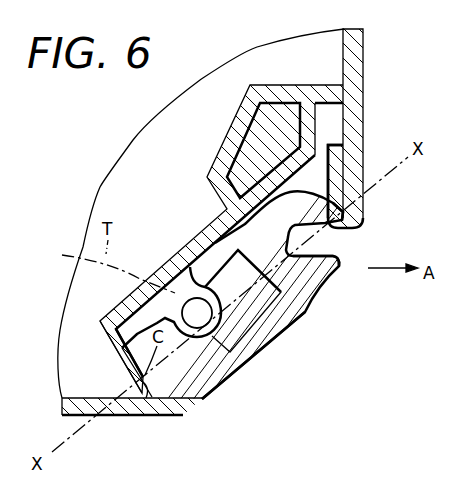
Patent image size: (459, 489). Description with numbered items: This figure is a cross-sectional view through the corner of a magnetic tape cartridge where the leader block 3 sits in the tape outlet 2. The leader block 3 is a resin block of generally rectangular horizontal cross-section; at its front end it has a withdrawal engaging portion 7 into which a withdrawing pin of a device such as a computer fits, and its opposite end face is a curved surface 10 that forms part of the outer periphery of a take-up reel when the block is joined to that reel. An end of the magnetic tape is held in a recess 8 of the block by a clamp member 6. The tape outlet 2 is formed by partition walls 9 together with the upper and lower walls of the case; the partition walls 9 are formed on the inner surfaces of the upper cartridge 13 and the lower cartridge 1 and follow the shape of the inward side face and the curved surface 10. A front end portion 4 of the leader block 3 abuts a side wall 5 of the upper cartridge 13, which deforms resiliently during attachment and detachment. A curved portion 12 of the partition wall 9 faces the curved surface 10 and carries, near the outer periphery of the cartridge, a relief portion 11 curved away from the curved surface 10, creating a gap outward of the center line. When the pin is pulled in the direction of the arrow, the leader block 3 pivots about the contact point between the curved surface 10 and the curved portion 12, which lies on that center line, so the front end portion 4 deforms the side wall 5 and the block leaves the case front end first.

The lower cartridge 1 is at (297, 322).
The tape outlet 2 is at (264, 357).
The leader block 3 is at (320, 280).
The front end portion 4 is at (338, 202).
The side wall 5 is at (364, 216).
The clamp member 6 is at (185, 303).
The withdrawal engaging portion 7 is at (312, 246).
The recess 8 is at (228, 357).
The partition wall 9 is at (197, 235).
The curved surface 10 is at (125, 368).
The relief portion 11 is at (139, 402).
The curved portion 12 is at (112, 350).
The upper cartridge 13 is at (364, 79).